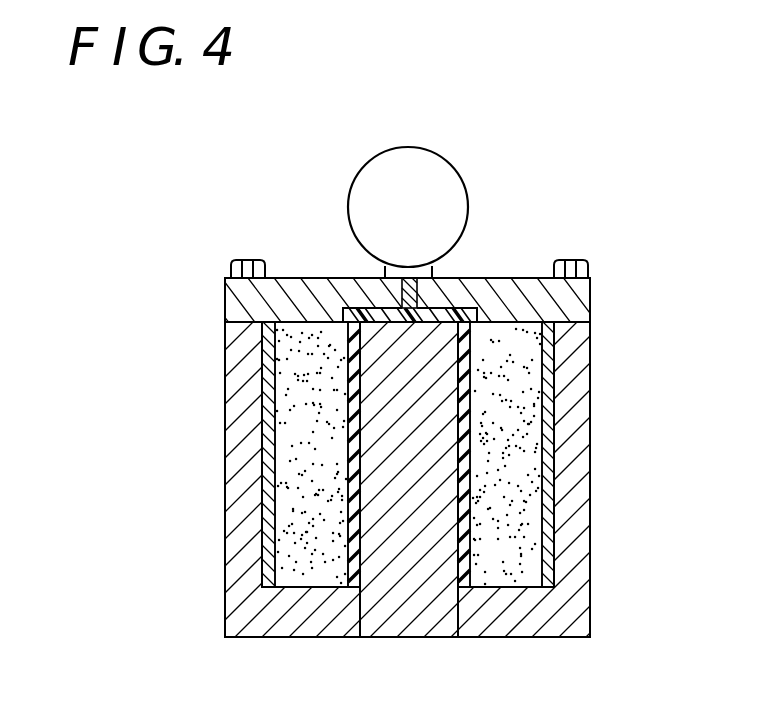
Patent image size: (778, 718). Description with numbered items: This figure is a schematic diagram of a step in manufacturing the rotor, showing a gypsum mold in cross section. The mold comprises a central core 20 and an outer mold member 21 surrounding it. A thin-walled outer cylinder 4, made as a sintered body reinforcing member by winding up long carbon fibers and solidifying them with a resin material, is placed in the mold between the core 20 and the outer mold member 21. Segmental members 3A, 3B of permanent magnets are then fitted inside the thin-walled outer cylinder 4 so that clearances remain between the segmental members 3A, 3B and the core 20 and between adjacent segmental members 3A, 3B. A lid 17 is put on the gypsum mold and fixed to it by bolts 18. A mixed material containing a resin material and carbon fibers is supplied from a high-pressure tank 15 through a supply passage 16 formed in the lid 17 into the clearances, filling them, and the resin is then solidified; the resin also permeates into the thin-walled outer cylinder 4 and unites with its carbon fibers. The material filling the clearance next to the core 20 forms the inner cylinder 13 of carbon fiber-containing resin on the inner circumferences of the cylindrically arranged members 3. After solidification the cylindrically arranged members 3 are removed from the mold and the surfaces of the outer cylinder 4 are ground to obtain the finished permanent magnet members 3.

The cylindrically arranged members 3 is at (310, 411).
The segmental member 3A is at (307, 489).
The segmental member 3B is at (510, 432).
The outer cylinder 4 is at (267, 543).
The inner cylinder 13 is at (353, 517).
The high-pressure tank 15 is at (373, 192).
The supply passage 16 is at (410, 292).
The lid 17 is at (542, 305).
The bolts 18 is at (248, 267).
The core 20 is at (393, 362).
The outer mold member 21 is at (245, 458).